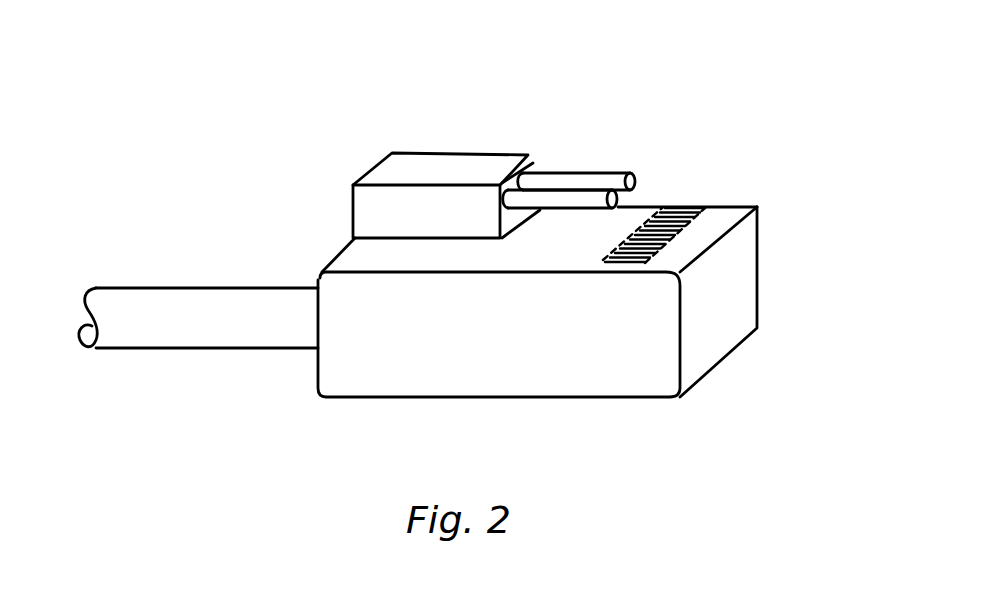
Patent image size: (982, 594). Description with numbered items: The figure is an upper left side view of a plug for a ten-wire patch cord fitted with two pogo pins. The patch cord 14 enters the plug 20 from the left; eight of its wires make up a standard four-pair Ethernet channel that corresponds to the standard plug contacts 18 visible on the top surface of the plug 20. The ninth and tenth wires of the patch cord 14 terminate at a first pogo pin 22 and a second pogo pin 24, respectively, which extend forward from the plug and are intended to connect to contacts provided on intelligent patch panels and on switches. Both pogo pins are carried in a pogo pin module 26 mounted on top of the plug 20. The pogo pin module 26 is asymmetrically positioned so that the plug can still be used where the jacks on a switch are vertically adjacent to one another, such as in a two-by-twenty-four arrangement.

The patch cord 14 is at (197, 254).
The standard plug contacts 18 is at (589, 241).
The plug 20 is at (582, 302).
The first pogo pin 22 is at (548, 200).
The second pogo pin 24 is at (612, 175).
The pogo pin module 26 is at (353, 200).